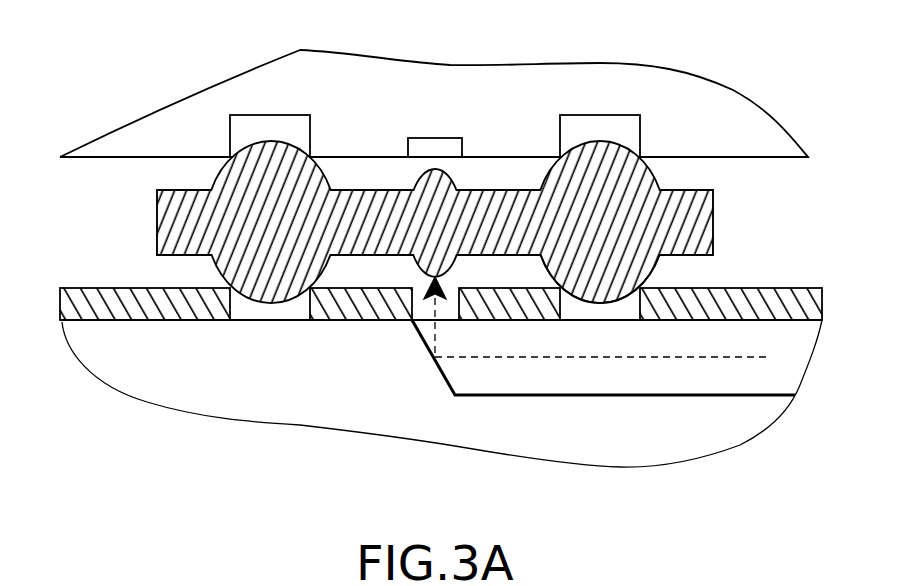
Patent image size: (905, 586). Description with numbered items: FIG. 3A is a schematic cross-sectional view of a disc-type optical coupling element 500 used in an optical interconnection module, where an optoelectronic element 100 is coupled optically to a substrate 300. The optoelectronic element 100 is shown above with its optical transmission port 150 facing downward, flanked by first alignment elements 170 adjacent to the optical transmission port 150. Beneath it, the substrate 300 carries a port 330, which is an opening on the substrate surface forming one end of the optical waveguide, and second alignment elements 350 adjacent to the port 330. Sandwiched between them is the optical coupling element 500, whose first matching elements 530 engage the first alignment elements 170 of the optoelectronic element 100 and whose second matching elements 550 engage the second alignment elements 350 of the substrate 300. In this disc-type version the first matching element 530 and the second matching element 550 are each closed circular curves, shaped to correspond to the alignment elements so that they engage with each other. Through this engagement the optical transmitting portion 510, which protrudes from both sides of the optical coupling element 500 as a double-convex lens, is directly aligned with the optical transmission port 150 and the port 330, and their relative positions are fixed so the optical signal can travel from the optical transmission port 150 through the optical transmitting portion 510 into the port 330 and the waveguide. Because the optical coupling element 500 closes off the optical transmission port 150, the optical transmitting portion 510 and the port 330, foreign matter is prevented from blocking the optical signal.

The optoelectronic element 100 is at (398, 103).
The first alignment element 170 is at (260, 115).
The optical transmission port 150 is at (458, 165).
The first matching element 530 is at (618, 152).
The optical coupling element 500 is at (737, 222).
The second matching element 550 is at (602, 305).
The second alignment element 350 is at (235, 302).
The substrate 300 is at (304, 391).
The port 330 is at (428, 312).
The optical transmitting portion 510 is at (412, 289).